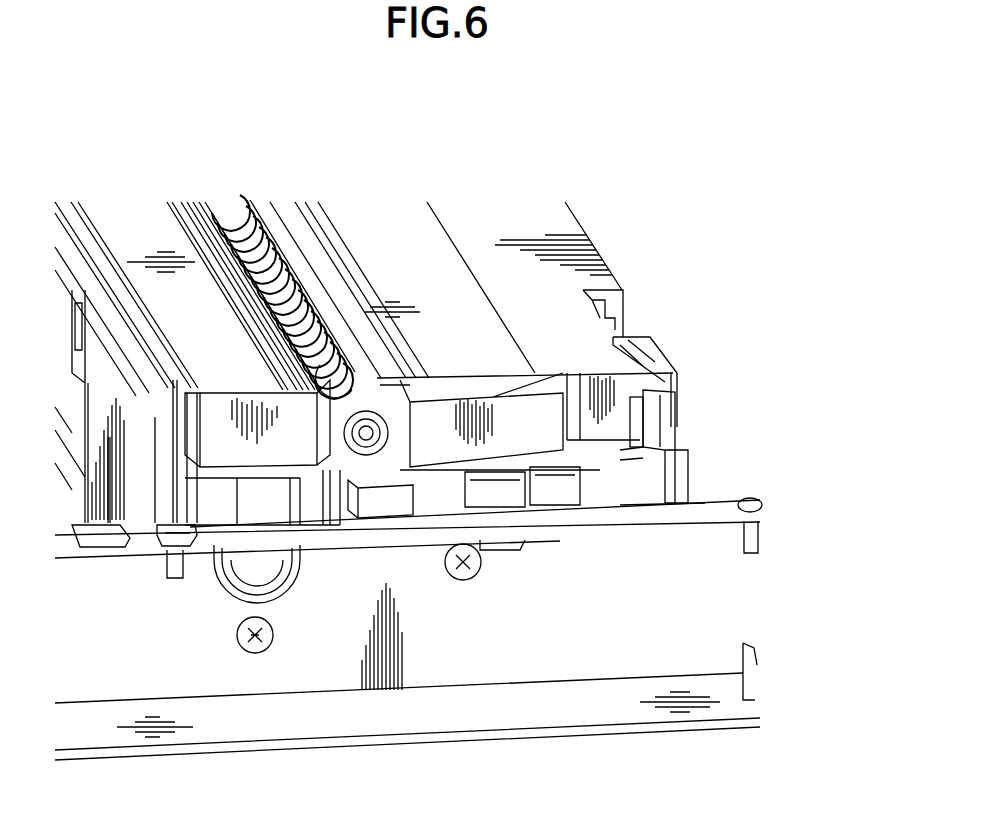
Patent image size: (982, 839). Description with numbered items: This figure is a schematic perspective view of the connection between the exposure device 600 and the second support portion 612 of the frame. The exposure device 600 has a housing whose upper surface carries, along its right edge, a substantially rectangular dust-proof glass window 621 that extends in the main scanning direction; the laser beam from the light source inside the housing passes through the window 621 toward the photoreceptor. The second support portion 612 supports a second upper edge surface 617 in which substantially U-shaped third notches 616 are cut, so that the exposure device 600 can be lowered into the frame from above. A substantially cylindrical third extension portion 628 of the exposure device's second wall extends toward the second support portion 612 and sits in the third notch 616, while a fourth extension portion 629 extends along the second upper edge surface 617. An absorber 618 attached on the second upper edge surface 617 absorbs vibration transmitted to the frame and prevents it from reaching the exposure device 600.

The exposure device 600 is at (683, 293).
The window 621 is at (143, 230).
The fourth extension portion 629 is at (676, 428).
The absorber 618 is at (692, 510).
The second upper edge surface 617 is at (557, 522).
The second support portion 612 is at (658, 582).
The third notch 616 is at (228, 578).
The third extension portion 628 is at (287, 580).